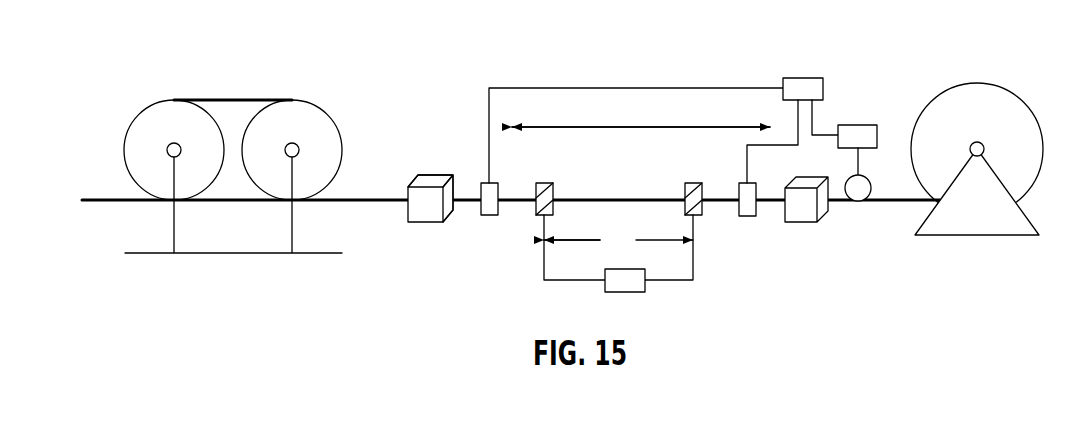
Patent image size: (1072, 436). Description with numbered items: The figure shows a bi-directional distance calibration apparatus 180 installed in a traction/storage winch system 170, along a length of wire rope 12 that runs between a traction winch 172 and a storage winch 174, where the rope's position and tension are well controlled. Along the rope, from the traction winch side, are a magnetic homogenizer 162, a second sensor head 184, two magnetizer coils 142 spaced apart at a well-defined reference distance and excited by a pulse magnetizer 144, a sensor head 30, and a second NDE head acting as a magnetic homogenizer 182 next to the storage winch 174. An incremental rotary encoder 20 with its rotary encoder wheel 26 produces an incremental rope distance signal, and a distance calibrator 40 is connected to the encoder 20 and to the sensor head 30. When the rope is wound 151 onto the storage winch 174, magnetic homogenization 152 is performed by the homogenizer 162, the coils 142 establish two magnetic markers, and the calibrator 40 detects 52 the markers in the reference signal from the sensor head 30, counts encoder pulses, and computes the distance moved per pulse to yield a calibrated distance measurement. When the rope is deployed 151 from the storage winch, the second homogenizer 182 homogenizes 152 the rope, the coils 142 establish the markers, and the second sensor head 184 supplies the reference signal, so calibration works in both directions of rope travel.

The wire rope 12 is at (233, 100).
The incremental rotary encoder 20 is at (858, 125).
The rotary encoder wheel 26 is at (858, 202).
The sensor head 30 is at (750, 183).
The distance calibrator 40 is at (803, 78).
The detection of magnetic markers 52 is at (496, 178).
The magnetizer coils 142 is at (548, 183).
The pulse magnetizer 144 is at (623, 293).
The winding or deploying of the wire rope 151 is at (643, 125).
The magnetic homogenization 152 is at (416, 170).
The magnetic homogenizer sensor head 162 is at (433, 182).
The traction/storage winch system 170 is at (112, 36).
The traction winch 172 is at (125, 105).
The storage winch 174 is at (974, 83).
The bi-directional distance calibration apparatus 180 is at (647, 67).
The second NDE head (magnetic homogenizer) 182 is at (803, 222).
The second sensor head 184 is at (490, 218).